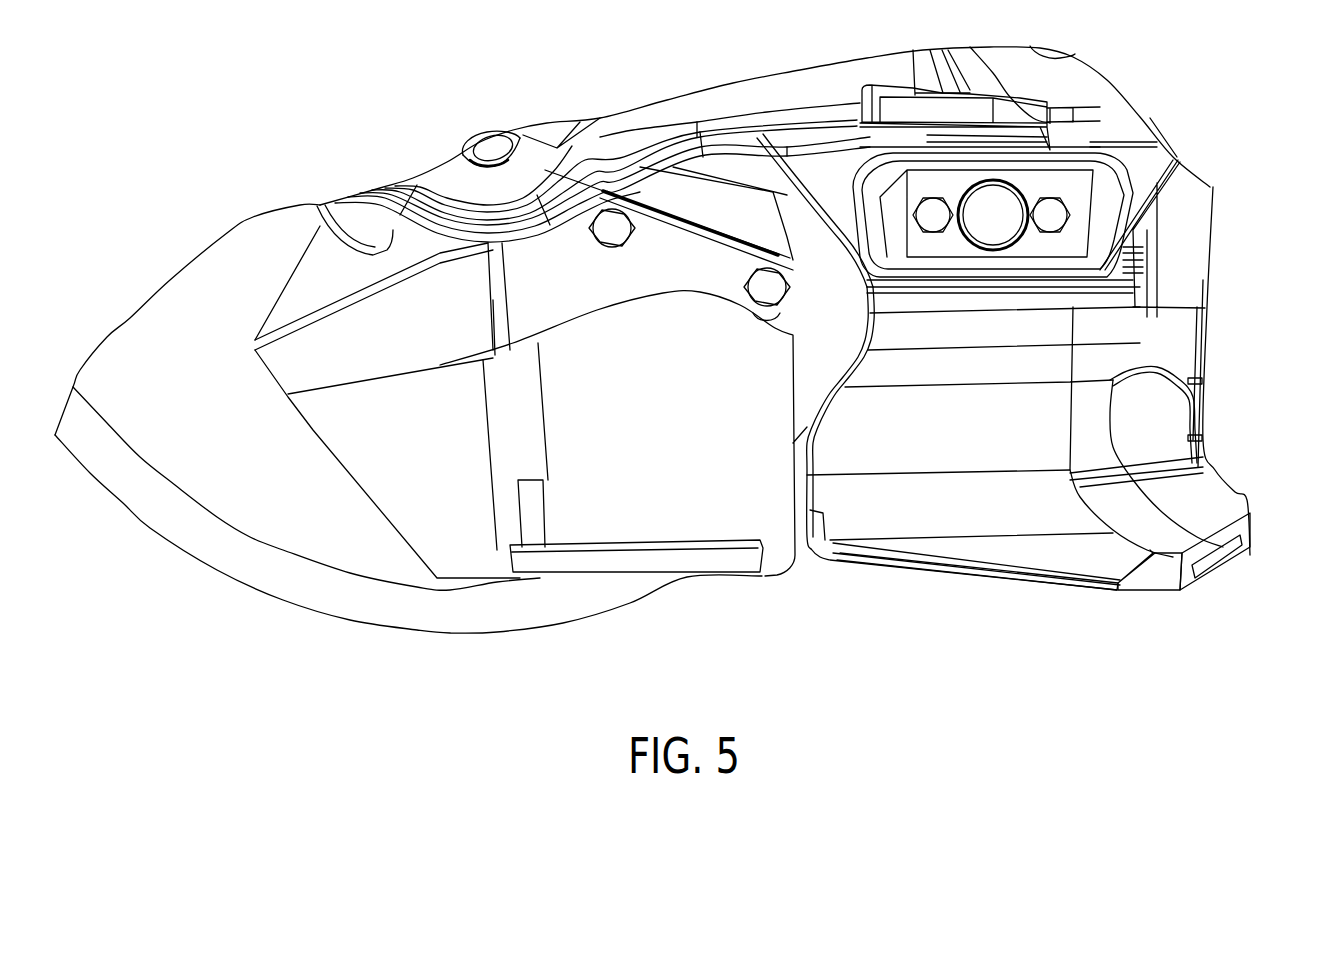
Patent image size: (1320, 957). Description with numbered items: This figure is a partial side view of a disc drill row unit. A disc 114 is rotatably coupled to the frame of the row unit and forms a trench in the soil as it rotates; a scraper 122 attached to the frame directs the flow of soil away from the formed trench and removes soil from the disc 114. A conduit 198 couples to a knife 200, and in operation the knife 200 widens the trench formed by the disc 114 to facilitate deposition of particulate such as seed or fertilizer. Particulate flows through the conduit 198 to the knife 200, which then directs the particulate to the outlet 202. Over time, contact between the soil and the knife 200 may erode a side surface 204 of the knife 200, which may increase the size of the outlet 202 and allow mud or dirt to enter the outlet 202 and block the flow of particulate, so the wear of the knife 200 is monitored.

The disc 114 is at (227, 568).
The scraper 122 is at (698, 522).
The conduit 198 is at (1225, 360).
The knife 200 is at (1043, 558).
The outlet 202 is at (1195, 565).
The side surface 204 is at (1158, 577).